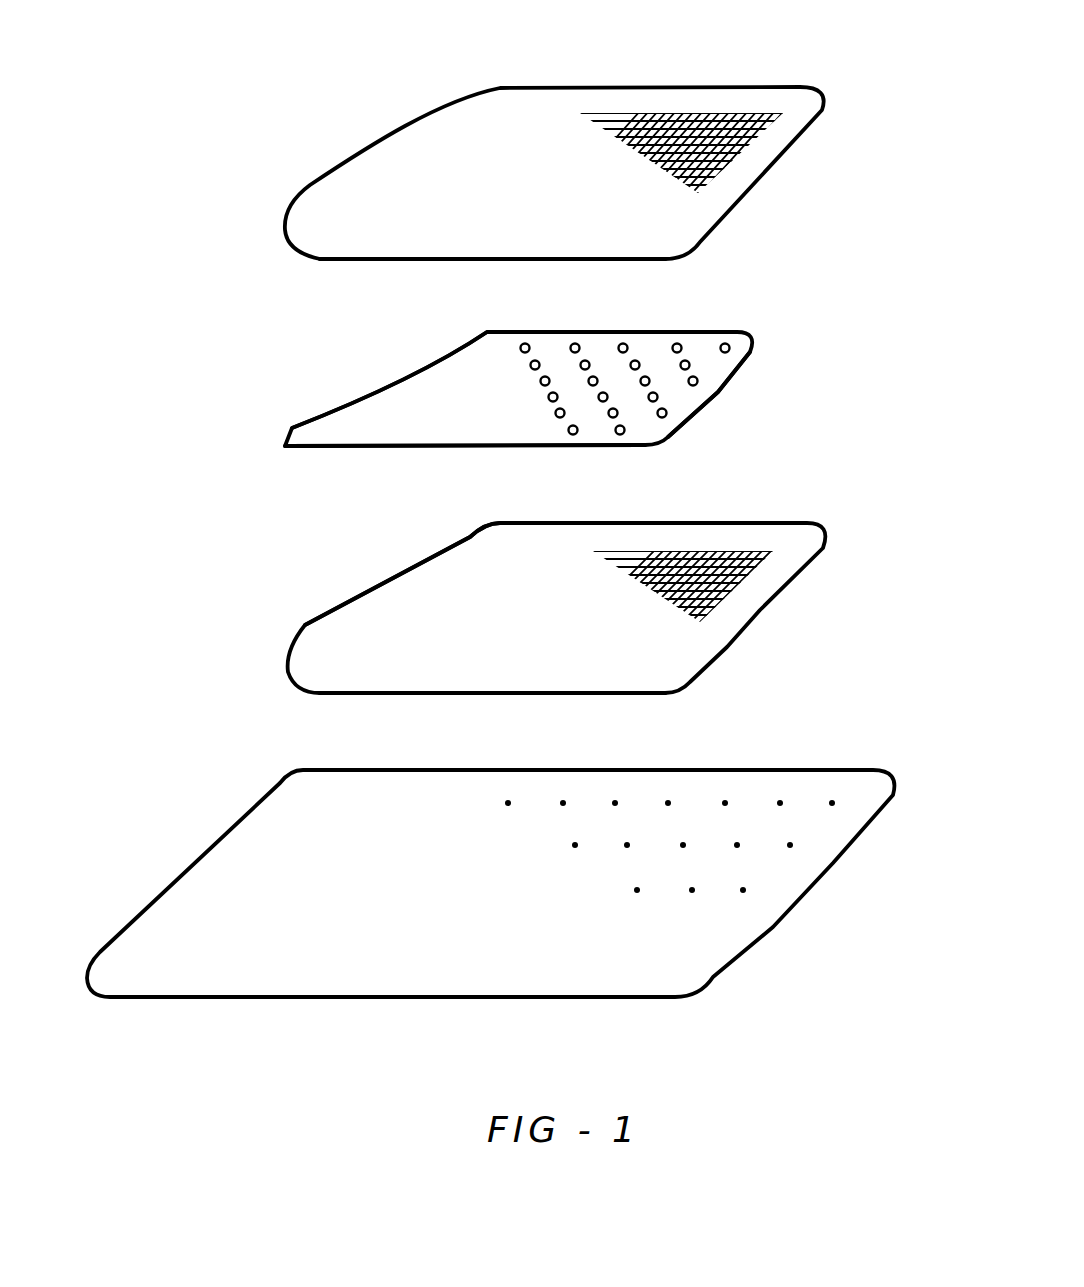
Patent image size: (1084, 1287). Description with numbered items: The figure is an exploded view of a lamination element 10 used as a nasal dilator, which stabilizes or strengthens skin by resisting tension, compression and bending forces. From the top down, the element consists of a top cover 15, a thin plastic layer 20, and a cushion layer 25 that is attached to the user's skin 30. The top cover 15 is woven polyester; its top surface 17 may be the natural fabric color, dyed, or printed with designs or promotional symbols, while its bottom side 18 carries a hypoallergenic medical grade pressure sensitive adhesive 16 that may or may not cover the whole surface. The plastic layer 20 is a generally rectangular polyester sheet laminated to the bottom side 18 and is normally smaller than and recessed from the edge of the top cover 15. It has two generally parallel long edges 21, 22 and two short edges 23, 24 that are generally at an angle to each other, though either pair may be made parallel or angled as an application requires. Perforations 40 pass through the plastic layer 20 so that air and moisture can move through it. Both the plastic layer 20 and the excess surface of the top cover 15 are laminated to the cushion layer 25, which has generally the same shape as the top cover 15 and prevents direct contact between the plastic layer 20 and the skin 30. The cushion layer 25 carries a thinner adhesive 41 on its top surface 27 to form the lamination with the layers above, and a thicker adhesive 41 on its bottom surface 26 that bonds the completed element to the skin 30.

The lamination element 10 is at (554, 585).
The top cover 15 is at (568, 173).
The adhesive 16 is at (363, 261).
The top surface 17 is at (533, 123).
The bottom side 18 is at (417, 263).
The plastic layer 20 is at (544, 361).
The long edge 21 is at (535, 332).
The long edge 22 is at (375, 450).
The short edge 23 is at (717, 397).
The short edge 24 is at (355, 393).
The cushion layer 25 is at (730, 620).
The bottom surface 26 is at (508, 697).
The top surface 27 is at (397, 608).
The skin 30 is at (770, 883).
The perforations 40 is at (637, 363).
The adhesive 41 is at (470, 568).